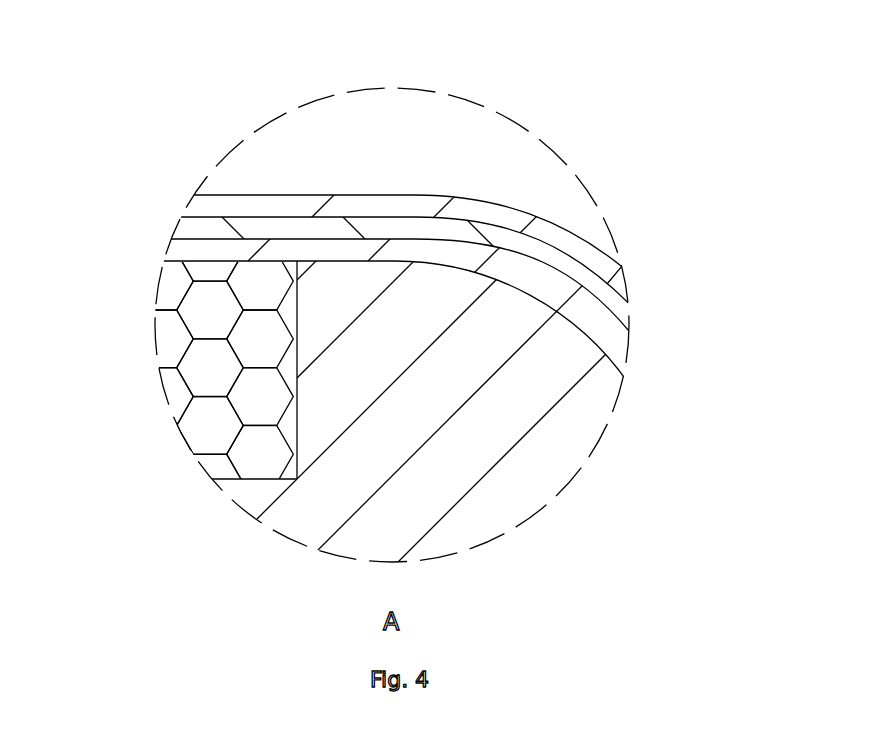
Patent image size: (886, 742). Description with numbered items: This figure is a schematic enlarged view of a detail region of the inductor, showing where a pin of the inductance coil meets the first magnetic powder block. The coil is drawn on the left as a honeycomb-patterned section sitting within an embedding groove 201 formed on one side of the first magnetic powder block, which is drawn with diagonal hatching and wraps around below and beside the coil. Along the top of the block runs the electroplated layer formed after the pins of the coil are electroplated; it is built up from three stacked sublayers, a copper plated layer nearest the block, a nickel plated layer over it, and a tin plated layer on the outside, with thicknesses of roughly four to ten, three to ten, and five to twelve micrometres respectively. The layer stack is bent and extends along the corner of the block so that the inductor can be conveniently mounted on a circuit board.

The embedding groove 201 is at (290, 318).